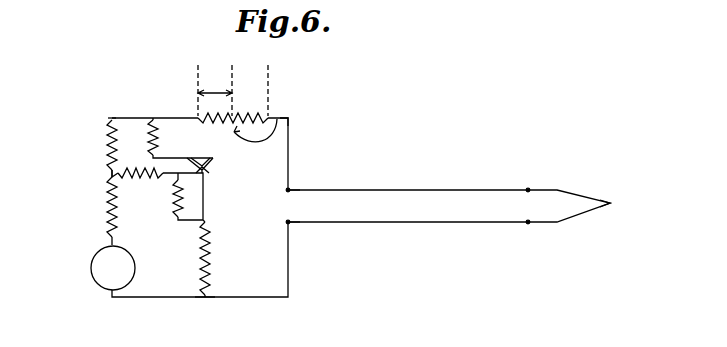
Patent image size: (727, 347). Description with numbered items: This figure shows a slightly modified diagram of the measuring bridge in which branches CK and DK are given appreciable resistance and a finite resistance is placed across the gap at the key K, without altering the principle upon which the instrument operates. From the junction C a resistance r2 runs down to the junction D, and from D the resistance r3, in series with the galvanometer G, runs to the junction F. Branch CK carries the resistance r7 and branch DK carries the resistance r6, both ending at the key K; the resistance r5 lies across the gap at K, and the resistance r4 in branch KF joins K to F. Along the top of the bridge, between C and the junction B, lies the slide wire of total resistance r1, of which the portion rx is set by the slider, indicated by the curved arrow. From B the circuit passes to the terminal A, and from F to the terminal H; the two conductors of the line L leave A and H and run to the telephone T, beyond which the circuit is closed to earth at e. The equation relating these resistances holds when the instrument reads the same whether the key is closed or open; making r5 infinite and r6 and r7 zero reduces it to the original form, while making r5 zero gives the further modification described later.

The junction C is at (109, 108).
The junction D is at (110, 174).
The resistance r2 is at (104, 118).
The resistance r3 is at (110, 297).
The resistance r6 is at (140, 189).
The resistance r7 is at (161, 137).
The key K is at (200, 156).
The resistance r5 is at (187, 198).
The resistance r4 is at (216, 258).
The galvanometer G is at (113, 268).
The junction F is at (205, 307).
The junction B is at (287, 112).
The slide wire resistance r1 is at (262, 75).
The resistance rx is at (222, 93).
The terminal A is at (280, 192).
The terminal H is at (284, 226).
The line L is at (408, 206).
The telephone T is at (568, 206).
The earth e is at (611, 205).